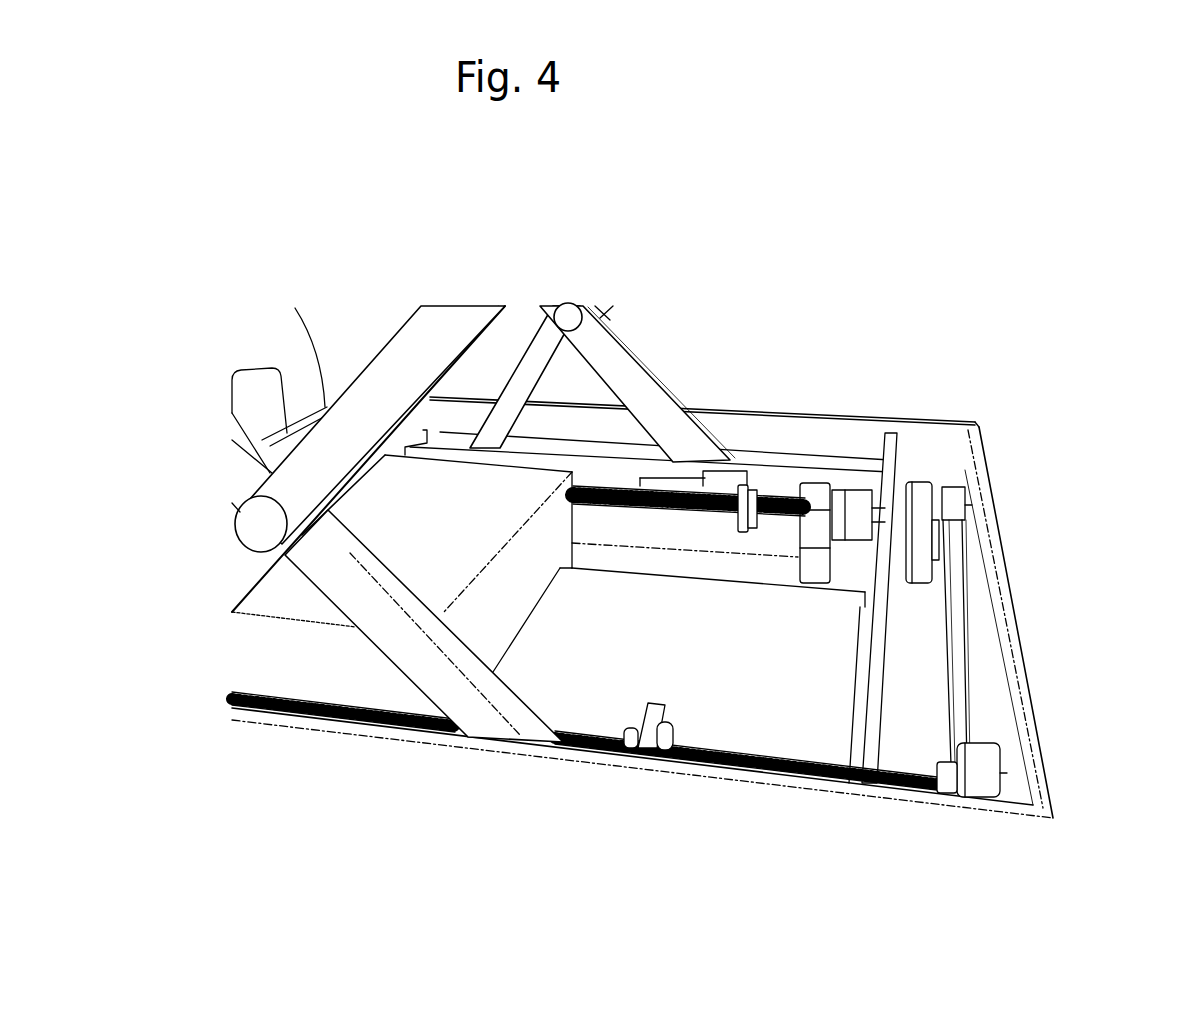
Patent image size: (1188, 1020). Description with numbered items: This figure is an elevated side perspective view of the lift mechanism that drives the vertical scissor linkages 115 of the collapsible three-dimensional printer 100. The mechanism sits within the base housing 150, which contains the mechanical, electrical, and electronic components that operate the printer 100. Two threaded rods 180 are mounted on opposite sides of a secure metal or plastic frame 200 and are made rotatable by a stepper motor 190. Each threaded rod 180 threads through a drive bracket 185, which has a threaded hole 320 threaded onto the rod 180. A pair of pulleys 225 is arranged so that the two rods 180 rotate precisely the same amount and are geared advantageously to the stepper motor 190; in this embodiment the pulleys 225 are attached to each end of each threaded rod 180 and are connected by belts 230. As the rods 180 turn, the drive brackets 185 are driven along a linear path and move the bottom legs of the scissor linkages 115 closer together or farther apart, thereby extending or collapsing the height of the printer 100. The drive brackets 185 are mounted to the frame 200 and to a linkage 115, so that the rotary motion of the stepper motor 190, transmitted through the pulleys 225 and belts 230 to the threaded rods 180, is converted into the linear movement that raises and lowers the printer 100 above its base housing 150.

The collapsible 3D printer 100 is at (800, 760).
The scissor linkage 115 is at (607, 358).
The base housing 150 is at (342, 750).
The threaded rod 180 is at (786, 497).
The drive bracket 185 is at (748, 493).
The stepper motor 190 is at (850, 503).
The frame 200 is at (888, 465).
The pulley 225 is at (936, 505).
The belt 230 is at (973, 683).
The threaded hole 320 is at (760, 493).